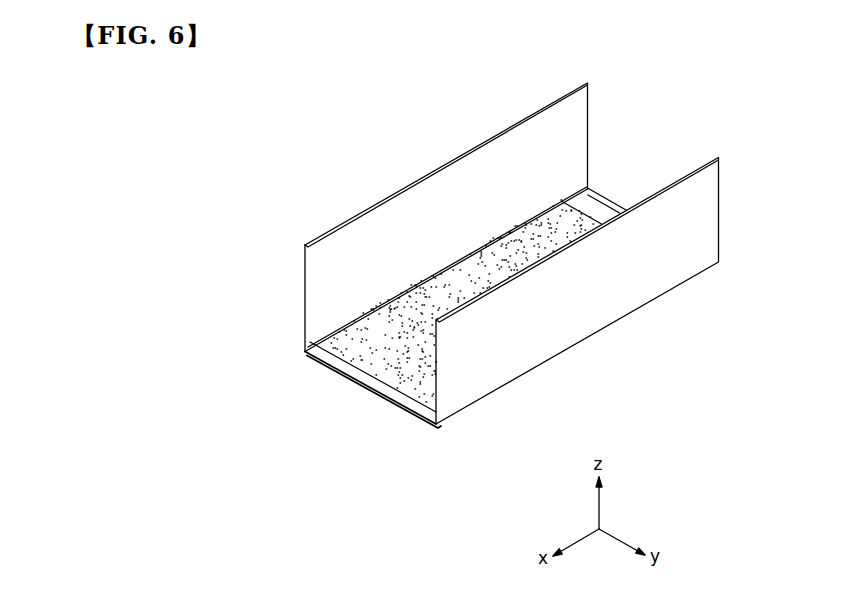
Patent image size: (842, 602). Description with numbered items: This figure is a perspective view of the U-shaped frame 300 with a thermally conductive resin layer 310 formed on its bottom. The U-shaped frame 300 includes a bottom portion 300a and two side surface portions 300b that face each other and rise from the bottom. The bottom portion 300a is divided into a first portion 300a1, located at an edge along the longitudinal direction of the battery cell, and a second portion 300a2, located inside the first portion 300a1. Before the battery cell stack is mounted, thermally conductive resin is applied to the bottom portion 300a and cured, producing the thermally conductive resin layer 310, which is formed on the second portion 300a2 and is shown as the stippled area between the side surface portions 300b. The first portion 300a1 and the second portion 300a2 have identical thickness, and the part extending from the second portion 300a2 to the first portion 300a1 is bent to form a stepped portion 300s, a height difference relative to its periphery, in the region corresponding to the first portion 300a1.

The U-shaped frame 300 is at (504, 281).
The bottom portion 300a is at (475, 303).
The first portion 300a1 is at (384, 392).
The second portion 300a2 is at (488, 275).
The side surface portion 300b is at (638, 268).
The stepped portion 300s is at (347, 370).
The thermally conductive resin layer 310 is at (442, 298).